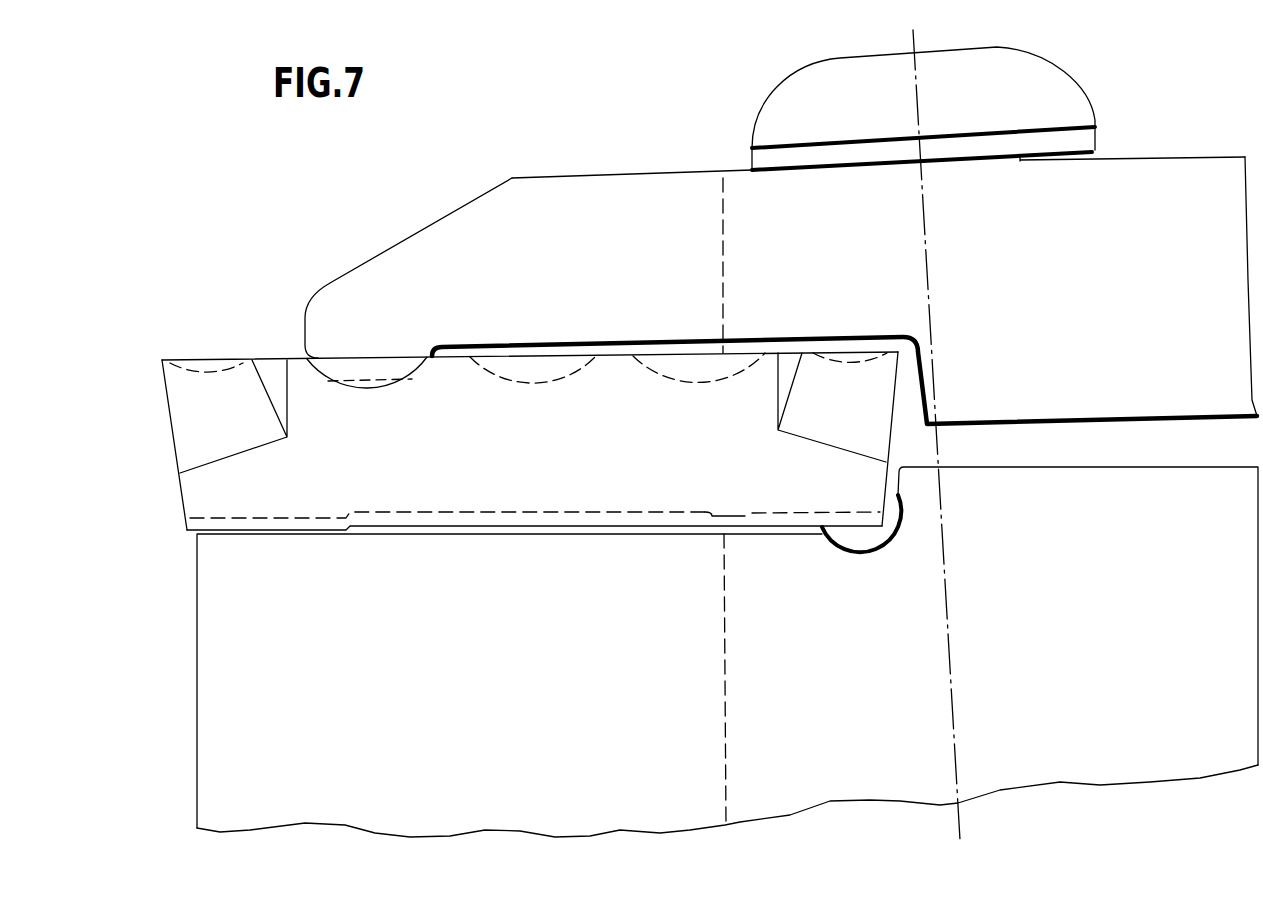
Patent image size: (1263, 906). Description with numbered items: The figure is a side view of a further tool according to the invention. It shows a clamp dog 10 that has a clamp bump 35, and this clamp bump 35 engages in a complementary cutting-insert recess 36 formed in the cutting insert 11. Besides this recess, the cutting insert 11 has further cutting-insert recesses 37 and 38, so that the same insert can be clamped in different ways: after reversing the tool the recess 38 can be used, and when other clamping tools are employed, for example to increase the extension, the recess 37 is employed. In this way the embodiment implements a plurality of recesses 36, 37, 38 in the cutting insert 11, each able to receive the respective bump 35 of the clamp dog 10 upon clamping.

The clamp dog 10 is at (370, 273).
The cutting insert 11 is at (584, 475).
The clamp bump 35 is at (350, 367).
The cutting-insert recess 36 is at (380, 387).
The cutting-insert recess 37 is at (522, 385).
The cutting-insert recess 38 is at (682, 385).